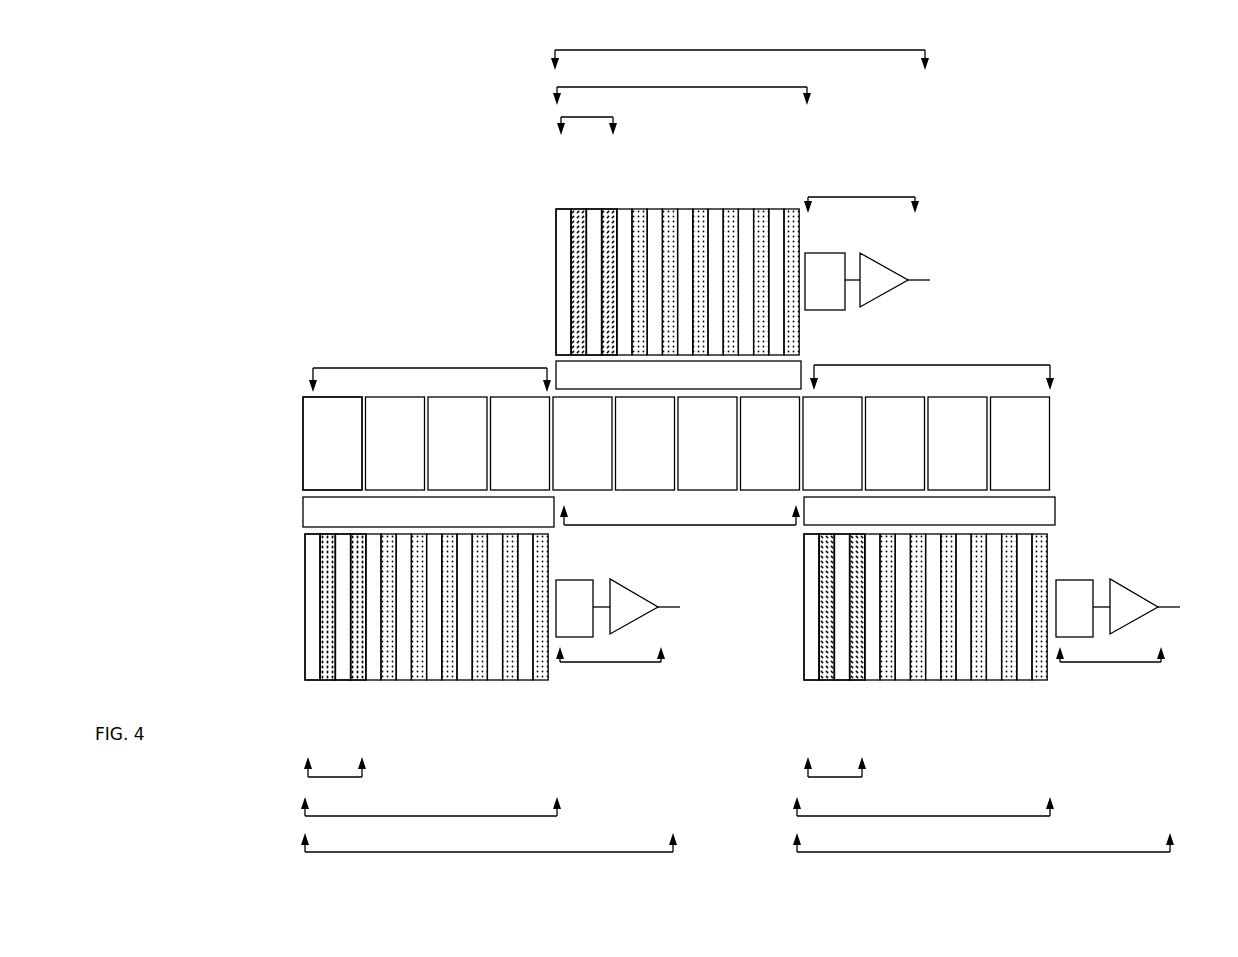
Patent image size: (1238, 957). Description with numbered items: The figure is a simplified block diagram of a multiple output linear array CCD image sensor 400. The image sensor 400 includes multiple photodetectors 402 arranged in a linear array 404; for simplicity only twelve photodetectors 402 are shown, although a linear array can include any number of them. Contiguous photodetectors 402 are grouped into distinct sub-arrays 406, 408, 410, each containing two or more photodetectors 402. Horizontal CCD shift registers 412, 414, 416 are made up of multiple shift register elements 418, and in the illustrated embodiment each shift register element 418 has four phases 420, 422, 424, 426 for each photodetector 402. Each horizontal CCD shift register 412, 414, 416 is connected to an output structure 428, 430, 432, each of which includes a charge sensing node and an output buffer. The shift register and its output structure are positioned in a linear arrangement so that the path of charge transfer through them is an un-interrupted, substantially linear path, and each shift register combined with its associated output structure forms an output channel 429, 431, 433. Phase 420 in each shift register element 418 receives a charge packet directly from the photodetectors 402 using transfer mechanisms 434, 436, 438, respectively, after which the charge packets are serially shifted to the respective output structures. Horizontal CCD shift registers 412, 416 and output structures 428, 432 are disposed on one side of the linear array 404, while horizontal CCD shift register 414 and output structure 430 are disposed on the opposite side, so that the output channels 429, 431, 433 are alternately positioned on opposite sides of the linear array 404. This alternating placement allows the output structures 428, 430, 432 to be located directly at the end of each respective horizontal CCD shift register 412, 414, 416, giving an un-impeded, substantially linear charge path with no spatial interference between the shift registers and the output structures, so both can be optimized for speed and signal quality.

The image sensor 400 is at (305, 315).
The photodetector 402 is at (313, 419).
The linear array 404 is at (268, 447).
The sub-array 406 is at (430, 367).
The sub-array 408 is at (680, 529).
The sub-array 410 is at (932, 366).
The horizontal CCD shift register 412 is at (431, 819).
The horizontal CCD shift register 414 is at (682, 85).
The horizontal CCD shift register 416 is at (923, 819).
The shift register element 418 is at (585, 448).
The phase 420 is at (561, 211).
The phase 422 is at (577, 210).
The phase 424 is at (594, 210).
The phase 426 is at (612, 210).
The output structure 428 is at (618, 632).
The output channel 429 is at (489, 854).
The output structure 430 is at (867, 243).
The output channel 431 is at (740, 49).
The output structure 432 is at (1118, 632).
The output channel 433 is at (983, 854).
The transfer mechanism 434 is at (313, 520).
The transfer mechanism 436 is at (560, 363).
The transfer mechanism 438 is at (1050, 515).